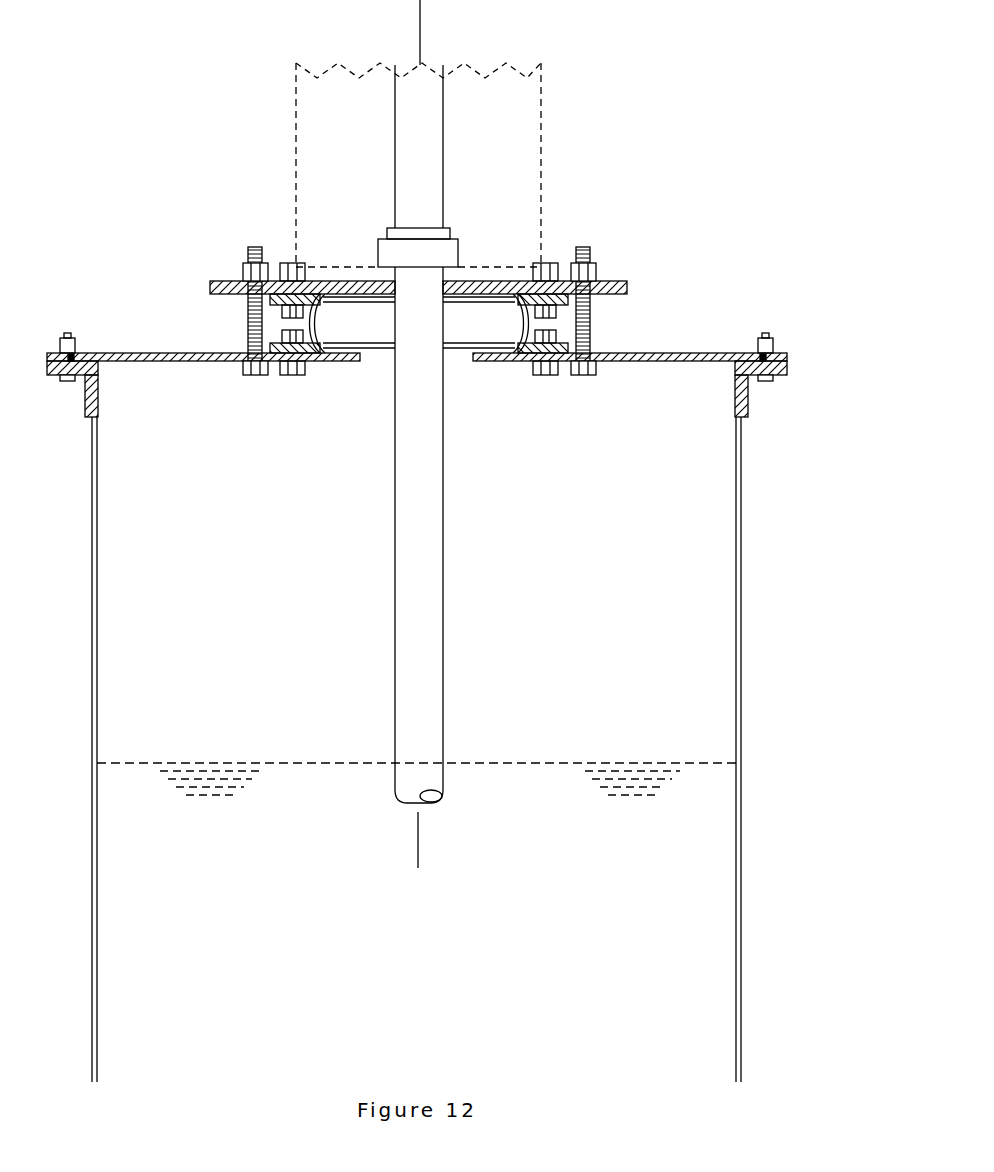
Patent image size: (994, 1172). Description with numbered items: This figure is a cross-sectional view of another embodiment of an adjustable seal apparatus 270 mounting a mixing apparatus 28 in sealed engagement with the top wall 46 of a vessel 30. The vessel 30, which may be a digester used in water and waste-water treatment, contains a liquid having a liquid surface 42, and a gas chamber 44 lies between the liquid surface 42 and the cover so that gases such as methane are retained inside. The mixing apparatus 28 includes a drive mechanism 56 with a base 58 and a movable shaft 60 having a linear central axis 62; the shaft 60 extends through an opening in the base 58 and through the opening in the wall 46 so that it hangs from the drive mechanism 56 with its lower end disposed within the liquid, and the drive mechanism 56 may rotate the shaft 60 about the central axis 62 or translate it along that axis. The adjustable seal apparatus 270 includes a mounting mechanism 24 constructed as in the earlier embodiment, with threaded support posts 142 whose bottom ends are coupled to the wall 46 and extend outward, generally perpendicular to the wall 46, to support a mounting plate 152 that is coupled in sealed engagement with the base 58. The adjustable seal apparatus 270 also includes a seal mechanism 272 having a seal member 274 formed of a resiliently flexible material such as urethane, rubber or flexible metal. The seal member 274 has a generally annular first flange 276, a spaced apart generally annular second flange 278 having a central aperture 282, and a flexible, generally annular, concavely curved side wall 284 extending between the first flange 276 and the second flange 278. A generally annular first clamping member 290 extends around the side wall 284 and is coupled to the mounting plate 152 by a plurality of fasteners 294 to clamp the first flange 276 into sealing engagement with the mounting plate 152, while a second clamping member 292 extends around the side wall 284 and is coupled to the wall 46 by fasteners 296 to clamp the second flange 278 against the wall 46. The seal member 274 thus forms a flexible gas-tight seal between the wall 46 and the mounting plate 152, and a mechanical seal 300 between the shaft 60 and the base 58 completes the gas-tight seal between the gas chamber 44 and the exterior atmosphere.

The adjustable mounting mechanism 24 is at (657, 272).
The mixing apparatus 28 is at (560, 62).
The vessel 30 is at (431, 707).
The liquid surface 42 is at (588, 763).
The gas chamber 44 is at (718, 669).
The top wall 46 is at (716, 348).
The drive mechanism 56 is at (545, 96).
The base 58 is at (518, 255).
The shaft 60 is at (445, 681).
The central axis 62 is at (420, 853).
The threaded support post 142 is at (255, 247).
The mounting plate 152 is at (215, 283).
The adjustable seal apparatus 270 is at (665, 232).
The seal mechanism 272 is at (461, 373).
The seal member 274 is at (463, 358).
The first flange 276 is at (285, 300).
The second flange 278 is at (290, 348).
The central aperture 282 is at (385, 366).
The side wall 284 is at (325, 325).
The first clamping member 290 is at (560, 313).
The second clamping member 292 is at (562, 345).
The fasteners 294 is at (300, 259).
The fasteners 296 is at (300, 376).
The mechanical seal 300 is at (457, 239).